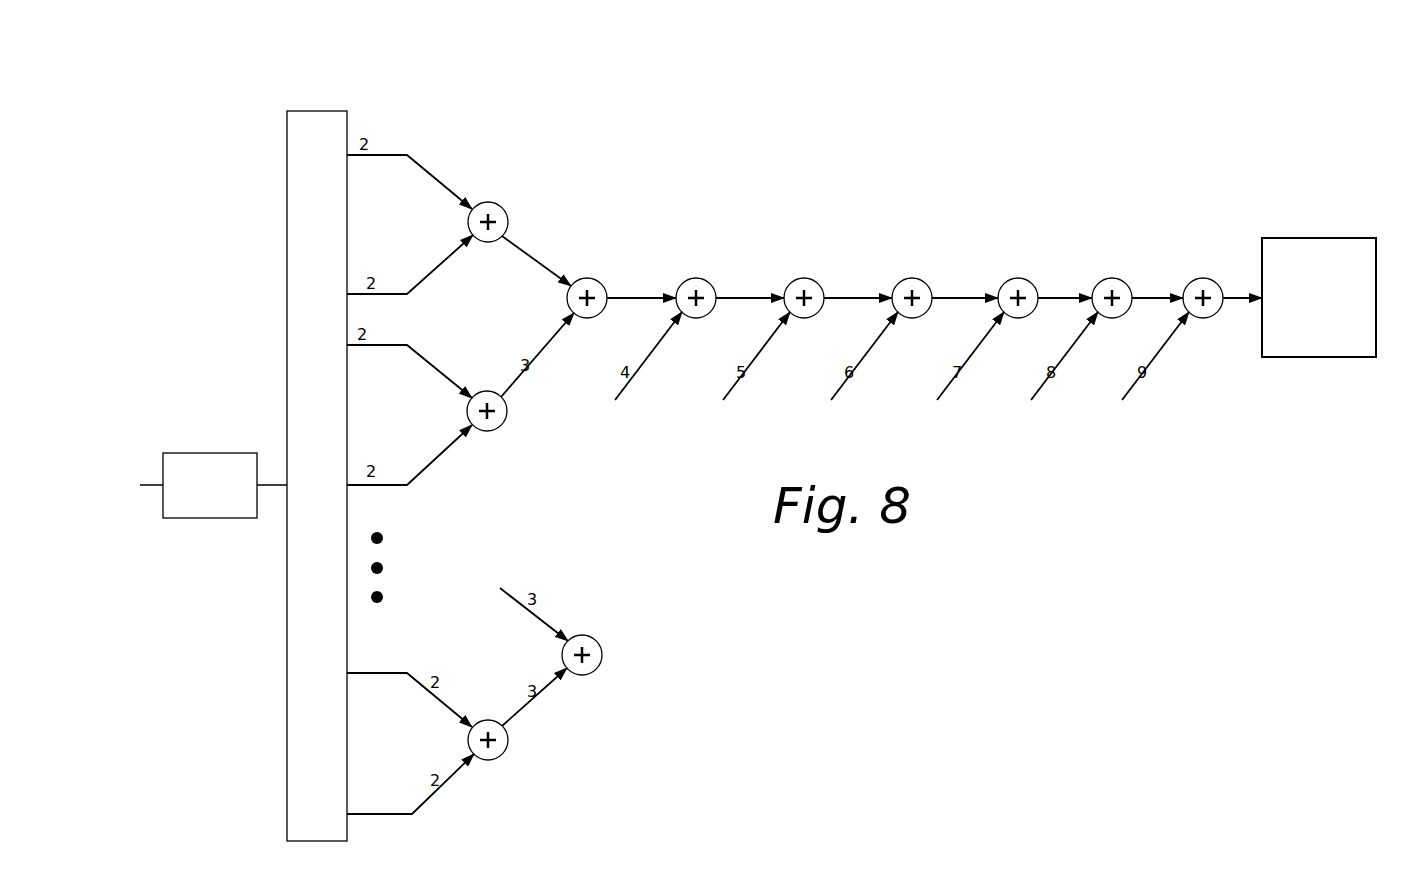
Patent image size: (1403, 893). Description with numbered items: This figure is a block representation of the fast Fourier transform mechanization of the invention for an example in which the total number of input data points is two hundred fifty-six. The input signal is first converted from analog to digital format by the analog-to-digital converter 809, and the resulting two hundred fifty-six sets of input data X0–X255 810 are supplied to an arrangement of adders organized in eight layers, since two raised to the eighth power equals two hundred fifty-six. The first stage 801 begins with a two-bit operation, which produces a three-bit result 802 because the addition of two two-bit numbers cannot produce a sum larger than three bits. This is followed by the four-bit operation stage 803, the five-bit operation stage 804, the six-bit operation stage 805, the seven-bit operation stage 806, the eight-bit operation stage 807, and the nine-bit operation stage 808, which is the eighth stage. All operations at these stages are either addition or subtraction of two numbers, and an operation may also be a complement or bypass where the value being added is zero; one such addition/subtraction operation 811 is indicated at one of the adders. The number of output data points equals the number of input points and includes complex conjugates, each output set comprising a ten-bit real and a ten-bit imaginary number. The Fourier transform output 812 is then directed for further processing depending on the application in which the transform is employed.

The first stage 801 is at (420, 160).
The 3-bit result stage 802 is at (536, 256).
The 4-bit operation stage 803 is at (643, 298).
The 5-bit operation stage 804 is at (751, 298).
The 6-bit operation stage 805 is at (859, 298).
The 7-bit operation stage 806 is at (965, 298).
The 8-bit operation stage 807 is at (1059, 298).
The eighth stage 808 is at (1162, 298).
The analog-to-digital converter 809 is at (228, 448).
The input data X0-X255 810 is at (313, 110).
The addition/subtraction operation 811 is at (496, 430).
The Fourier transform output 812 is at (1297, 238).